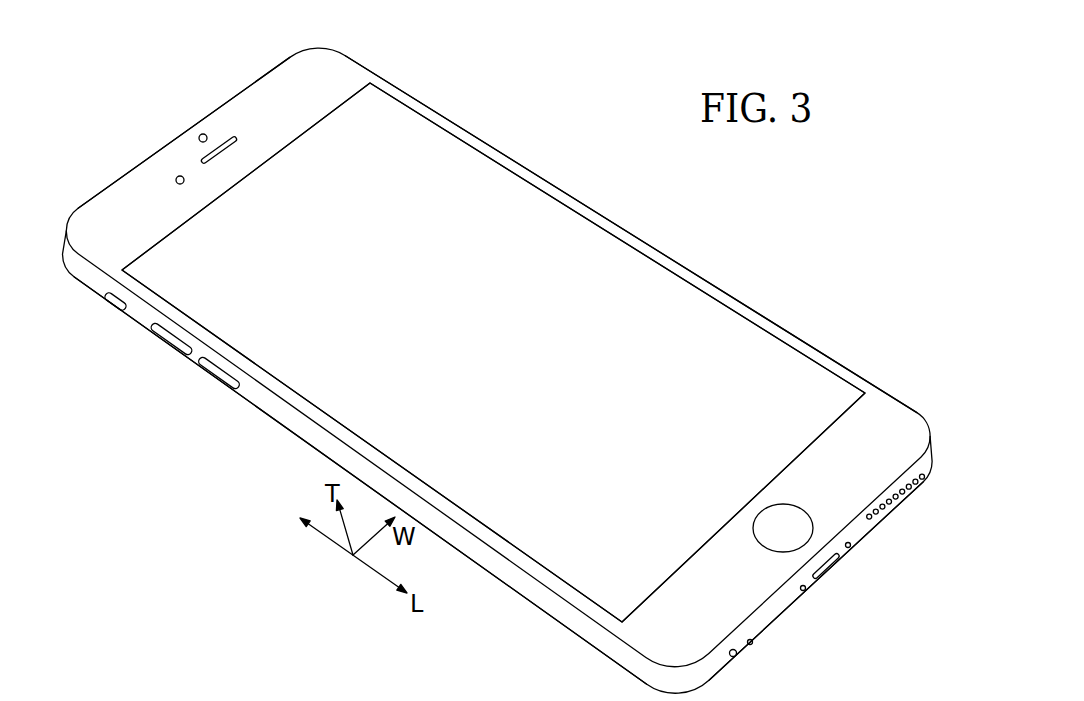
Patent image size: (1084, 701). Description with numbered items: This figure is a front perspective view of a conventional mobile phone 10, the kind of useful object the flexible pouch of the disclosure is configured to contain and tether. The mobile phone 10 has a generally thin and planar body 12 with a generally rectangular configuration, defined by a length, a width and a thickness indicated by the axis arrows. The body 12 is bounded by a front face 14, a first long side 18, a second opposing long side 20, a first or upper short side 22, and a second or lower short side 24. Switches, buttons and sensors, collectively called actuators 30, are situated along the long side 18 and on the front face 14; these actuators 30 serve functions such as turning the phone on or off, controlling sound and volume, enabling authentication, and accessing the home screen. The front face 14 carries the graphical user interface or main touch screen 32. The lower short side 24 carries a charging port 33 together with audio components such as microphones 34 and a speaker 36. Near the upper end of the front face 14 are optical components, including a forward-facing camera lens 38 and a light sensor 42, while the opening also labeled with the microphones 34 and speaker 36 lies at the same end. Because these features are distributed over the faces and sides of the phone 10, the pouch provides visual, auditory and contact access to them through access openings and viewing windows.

The mobile phone 10 is at (727, 228).
The body 12 is at (212, 436).
The front face 14 is at (875, 418).
The first long side 18 is at (310, 445).
The second long side 20 is at (501, 152).
The first short side 22 is at (222, 108).
The second short side 24 is at (782, 615).
The actuators 30 is at (217, 377).
The main screen 32 is at (552, 298).
The charging port 33 is at (830, 568).
The microphones 34 is at (238, 137).
The speaker 36 is at (897, 508).
The forward-facing camera lens 38 is at (178, 177).
The light sensor 42 is at (199, 136).